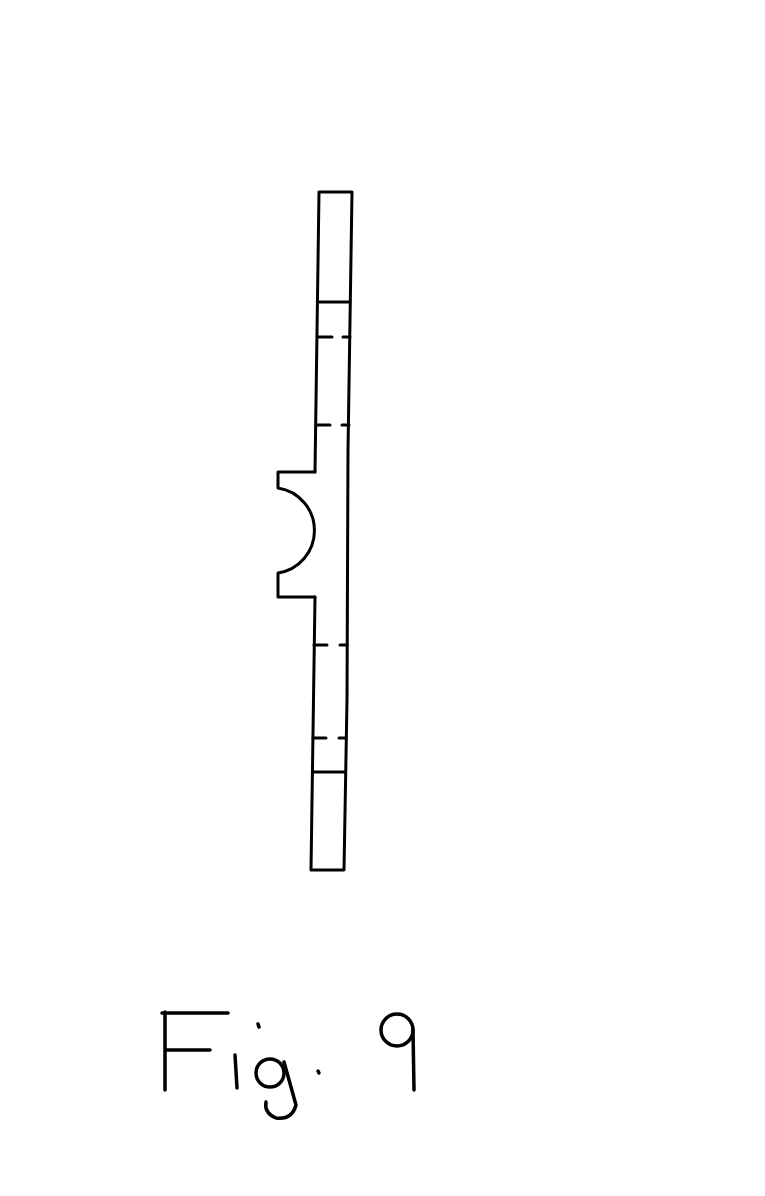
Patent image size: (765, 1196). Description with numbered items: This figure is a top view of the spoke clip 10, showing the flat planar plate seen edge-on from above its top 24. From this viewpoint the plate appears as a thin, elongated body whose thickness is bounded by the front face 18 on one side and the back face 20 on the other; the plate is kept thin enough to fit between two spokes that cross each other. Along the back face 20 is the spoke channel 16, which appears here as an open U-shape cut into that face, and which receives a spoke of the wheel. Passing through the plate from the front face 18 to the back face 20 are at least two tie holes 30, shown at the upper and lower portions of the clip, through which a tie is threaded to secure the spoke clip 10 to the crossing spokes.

The spoke clip 10 is at (575, 158).
The spoke channel 16 is at (317, 533).
The front face 18 is at (372, 474).
The back face 20 is at (297, 455).
The top 24 is at (347, 533).
The tie holes 30 is at (415, 363).